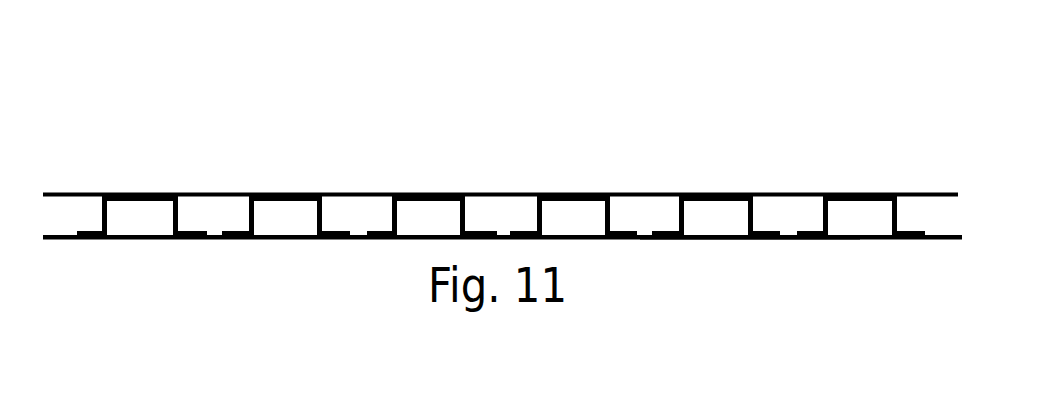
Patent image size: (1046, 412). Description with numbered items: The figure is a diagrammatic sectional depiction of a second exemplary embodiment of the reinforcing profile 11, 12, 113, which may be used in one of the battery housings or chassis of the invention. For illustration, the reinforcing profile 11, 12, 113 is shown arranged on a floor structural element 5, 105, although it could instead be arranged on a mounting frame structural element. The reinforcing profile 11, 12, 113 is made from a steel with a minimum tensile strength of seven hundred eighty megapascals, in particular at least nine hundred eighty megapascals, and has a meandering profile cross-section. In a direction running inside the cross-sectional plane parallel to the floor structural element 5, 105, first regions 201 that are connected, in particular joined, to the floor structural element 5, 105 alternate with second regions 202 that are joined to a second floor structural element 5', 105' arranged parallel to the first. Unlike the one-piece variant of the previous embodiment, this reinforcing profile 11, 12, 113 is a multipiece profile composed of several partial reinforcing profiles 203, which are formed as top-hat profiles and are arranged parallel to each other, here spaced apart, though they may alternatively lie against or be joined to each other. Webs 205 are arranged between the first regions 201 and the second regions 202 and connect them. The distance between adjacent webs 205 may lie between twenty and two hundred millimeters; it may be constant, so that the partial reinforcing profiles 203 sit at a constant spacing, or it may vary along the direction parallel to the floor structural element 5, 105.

The floor structural element 5 is at (500, 159).
The floor structural element 105 is at (500, 159).
The second floor structural element 5' is at (502, 277).
The second floor structural element 105' is at (502, 277).
The reinforcing profile 11 is at (502, 223).
The reinforcing profile 12 is at (502, 223).
The reinforcing profile 113 is at (502, 223).
The first regions 201 is at (277, 195).
The second regions 202 is at (233, 239).
The partial reinforcing profiles 203 is at (839, 260).
The webs 205 is at (392, 213).